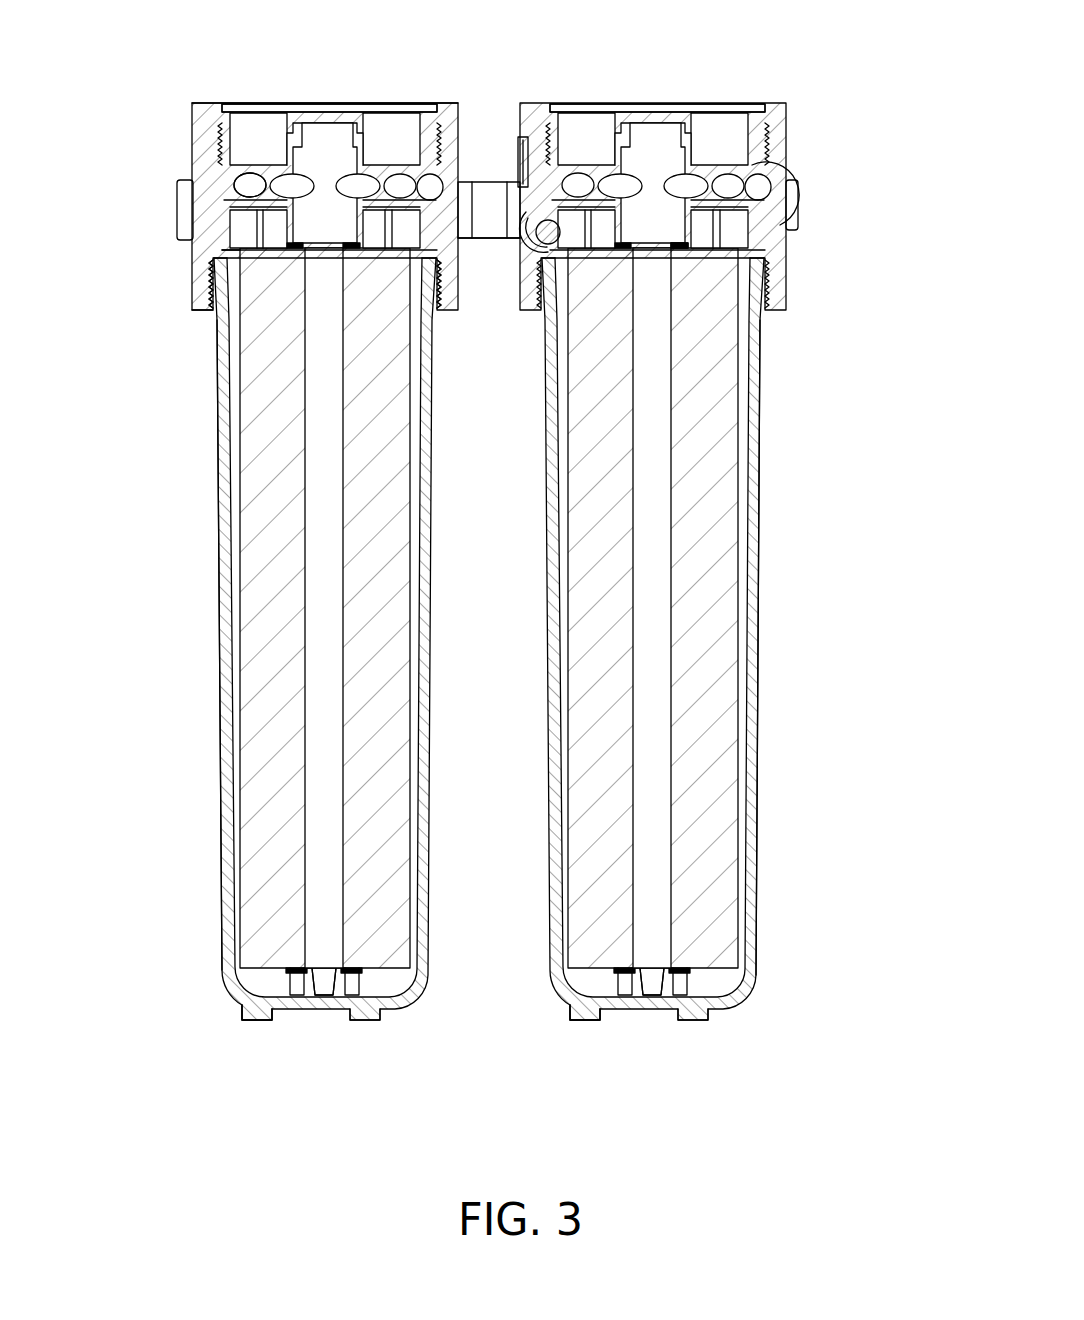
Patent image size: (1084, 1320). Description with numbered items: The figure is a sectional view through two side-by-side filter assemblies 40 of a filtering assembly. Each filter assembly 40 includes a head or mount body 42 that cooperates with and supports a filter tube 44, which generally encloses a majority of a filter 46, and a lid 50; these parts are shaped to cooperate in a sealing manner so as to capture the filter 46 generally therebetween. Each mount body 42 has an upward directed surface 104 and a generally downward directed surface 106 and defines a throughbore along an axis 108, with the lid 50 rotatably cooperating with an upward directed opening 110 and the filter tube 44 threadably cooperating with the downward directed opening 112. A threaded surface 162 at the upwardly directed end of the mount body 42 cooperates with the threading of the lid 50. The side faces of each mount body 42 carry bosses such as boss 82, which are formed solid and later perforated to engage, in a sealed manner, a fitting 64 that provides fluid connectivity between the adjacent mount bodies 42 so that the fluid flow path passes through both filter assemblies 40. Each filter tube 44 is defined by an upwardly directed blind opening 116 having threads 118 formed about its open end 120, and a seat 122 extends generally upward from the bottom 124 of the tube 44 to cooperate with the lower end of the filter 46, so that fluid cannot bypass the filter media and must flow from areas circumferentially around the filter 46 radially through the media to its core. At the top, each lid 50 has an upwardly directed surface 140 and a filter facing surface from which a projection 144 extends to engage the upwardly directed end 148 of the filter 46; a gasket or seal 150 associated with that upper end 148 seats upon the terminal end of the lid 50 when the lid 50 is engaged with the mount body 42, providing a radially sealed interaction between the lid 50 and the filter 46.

The filter assembly 40 is at (500, 557).
The mount body 42 is at (198, 257).
The filter tube 44 is at (220, 685).
The filter 46 is at (385, 612).
The lid 50 is at (333, 103).
The fitting 64 is at (485, 239).
The boss 82 is at (463, 181).
The upward directed surface 104 is at (475, 77).
The downward directed surface 106 is at (175, 357).
The axis 108 is at (326, 72).
The upward directed opening 110 is at (224, 103).
The downward directed opening 112 is at (213, 307).
The blind opening 116 is at (233, 245).
The threads 118 is at (442, 293).
The open end 120 is at (223, 257).
The seat 122 is at (350, 950).
The bottom 124 is at (269, 1012).
The upwardly directed surface 140 is at (565, 105).
The projection 144 is at (693, 227).
The upwardly directed end 148 is at (262, 294).
The seal 150 is at (695, 247).
The threaded surface 162 is at (767, 120).